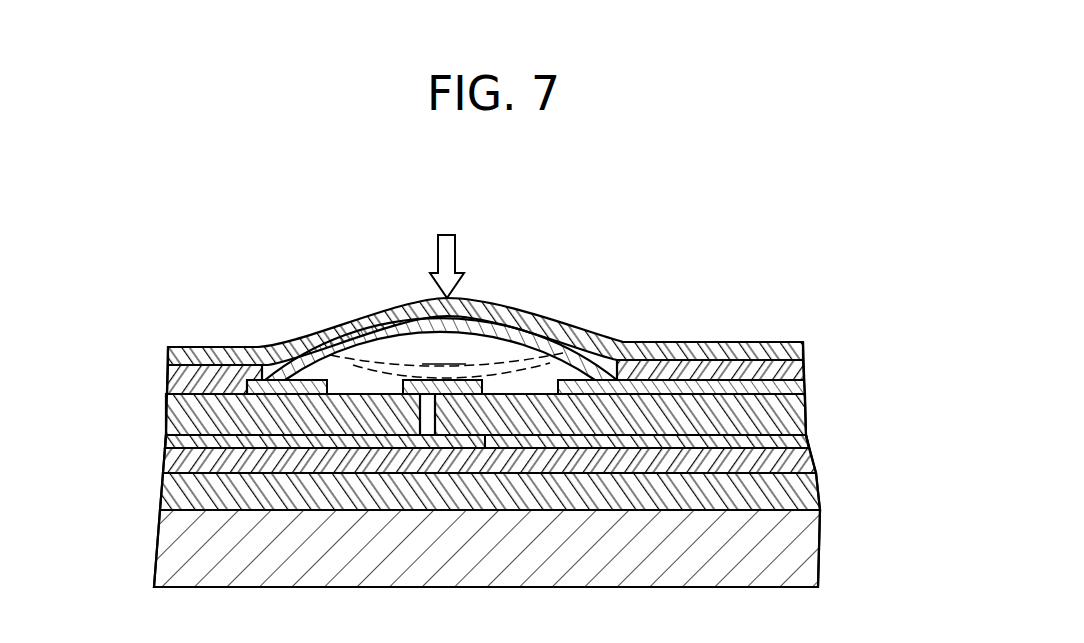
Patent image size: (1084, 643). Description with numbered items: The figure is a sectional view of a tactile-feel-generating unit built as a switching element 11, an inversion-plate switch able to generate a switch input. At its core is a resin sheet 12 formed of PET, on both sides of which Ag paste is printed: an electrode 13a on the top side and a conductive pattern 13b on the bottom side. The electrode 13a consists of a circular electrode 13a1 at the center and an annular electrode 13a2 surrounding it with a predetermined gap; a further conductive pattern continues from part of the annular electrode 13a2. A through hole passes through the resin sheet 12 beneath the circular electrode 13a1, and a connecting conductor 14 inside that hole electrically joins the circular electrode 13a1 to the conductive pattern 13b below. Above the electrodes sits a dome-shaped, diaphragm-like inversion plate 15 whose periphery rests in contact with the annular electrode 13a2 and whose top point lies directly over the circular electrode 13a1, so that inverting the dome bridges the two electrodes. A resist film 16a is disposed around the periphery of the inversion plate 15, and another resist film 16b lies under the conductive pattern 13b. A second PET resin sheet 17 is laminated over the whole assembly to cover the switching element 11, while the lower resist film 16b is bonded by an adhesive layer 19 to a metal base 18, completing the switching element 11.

The switching element 11 is at (631, 274).
The resin sheet 12 is at (806, 432).
The electrode 13a is at (805, 374).
The circular electrode 13a1 is at (466, 378).
The annular electrode 13a2 is at (270, 388).
The conductive pattern 13b is at (165, 443).
The connecting conductor 14 is at (430, 378).
The inversion plate 15 is at (338, 340).
The resist film 16a is at (168, 382).
The resist film 16b is at (172, 465).
The resin sheet 17 is at (804, 350).
The metal base 18 is at (792, 560).
The adhesive layer 19 is at (168, 493).